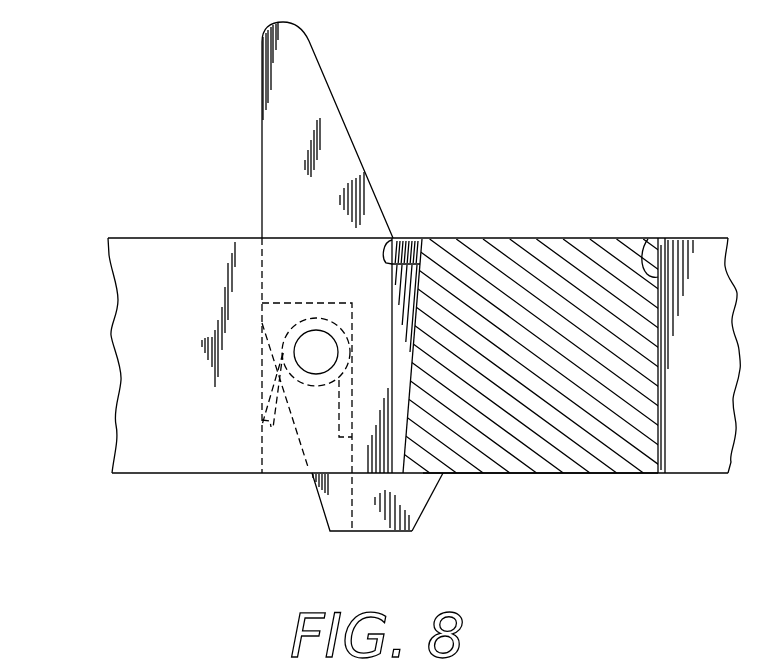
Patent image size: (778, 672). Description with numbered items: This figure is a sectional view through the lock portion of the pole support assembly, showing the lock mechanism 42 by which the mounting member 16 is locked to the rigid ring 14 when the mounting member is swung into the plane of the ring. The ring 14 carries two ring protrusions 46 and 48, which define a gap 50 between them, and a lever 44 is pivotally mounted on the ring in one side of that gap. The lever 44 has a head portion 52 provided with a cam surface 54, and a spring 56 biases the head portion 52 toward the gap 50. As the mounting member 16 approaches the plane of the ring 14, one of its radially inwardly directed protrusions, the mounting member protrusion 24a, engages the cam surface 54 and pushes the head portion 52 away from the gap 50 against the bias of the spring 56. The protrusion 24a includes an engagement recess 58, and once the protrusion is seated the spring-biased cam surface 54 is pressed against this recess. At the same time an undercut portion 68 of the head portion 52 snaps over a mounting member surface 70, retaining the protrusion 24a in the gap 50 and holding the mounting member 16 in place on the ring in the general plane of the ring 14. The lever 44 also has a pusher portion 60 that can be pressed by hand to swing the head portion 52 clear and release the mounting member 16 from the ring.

The rigid ring 14 is at (395, 357).
The mounting member 16 is at (547, 473).
The mounting member protrusion 24a is at (640, 473).
The lock mechanism 42 is at (263, 551).
The lever 44 is at (328, 85).
The ring protrusion 46 is at (697, 473).
The ring protrusion 48 is at (110, 334).
The gap 50 is at (648, 239).
The head portion 52 is at (372, 531).
The cam surface 54 is at (427, 507).
The spring 56 is at (283, 381).
The engagement recess 58 is at (392, 240).
The pusher portion 60 is at (262, 92).
The undercut portion 68 is at (427, 473).
The mounting member surface 70 is at (608, 473).